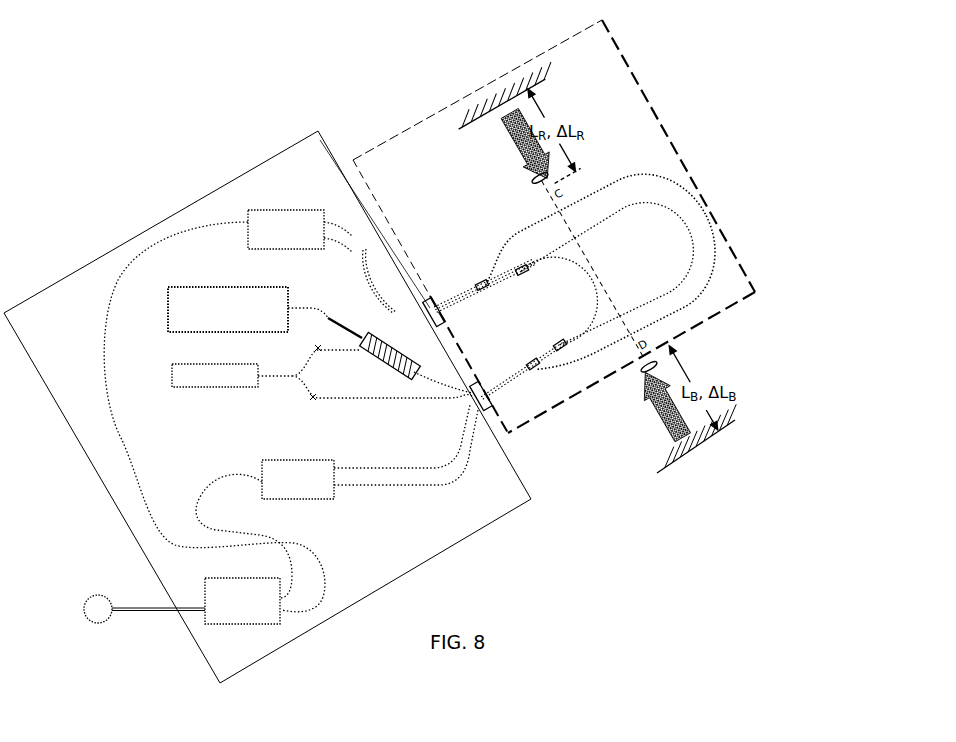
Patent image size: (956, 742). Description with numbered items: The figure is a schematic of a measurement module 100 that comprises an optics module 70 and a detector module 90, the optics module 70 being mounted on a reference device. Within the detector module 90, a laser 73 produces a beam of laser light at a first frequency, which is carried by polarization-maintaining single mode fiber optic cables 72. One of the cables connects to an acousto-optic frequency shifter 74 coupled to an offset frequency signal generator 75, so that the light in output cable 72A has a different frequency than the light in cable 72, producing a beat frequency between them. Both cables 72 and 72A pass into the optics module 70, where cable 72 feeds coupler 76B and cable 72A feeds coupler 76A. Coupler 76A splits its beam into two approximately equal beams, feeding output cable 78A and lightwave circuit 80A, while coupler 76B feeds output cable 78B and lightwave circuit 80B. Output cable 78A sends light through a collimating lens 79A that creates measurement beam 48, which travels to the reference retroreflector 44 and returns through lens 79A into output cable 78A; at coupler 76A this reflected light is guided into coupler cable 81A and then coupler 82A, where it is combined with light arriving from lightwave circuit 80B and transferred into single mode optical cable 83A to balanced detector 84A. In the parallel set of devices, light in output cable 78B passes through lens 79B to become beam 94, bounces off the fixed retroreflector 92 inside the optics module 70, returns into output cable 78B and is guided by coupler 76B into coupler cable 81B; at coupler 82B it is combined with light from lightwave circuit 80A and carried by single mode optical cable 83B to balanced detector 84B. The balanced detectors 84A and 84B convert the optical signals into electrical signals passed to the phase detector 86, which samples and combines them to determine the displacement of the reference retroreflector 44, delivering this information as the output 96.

The measurement module 100 is at (262, 58).
The optics module 70 is at (409, 122).
The detector module 90 is at (268, 158).
The fixed retroreflector 92 is at (500, 101).
The measurement beam (reference beam) 94 is at (500, 123).
The output cable 78A is at (648, 350).
The output cable 78B is at (572, 190).
The lightwave circuit 80A is at (675, 303).
The lightwave circuit 80B is at (668, 175).
The reference retroreflector 44 is at (697, 455).
The measurement beam 48 is at (735, 420).
The collimating lens 79A is at (646, 375).
The lens 79B is at (532, 183).
The coupler 76A is at (507, 260).
The coupler 76B is at (566, 350).
The coupler cable 81A is at (490, 275).
The coupler cable 81B is at (547, 362).
The coupler 82A is at (478, 282).
The coupler 82B is at (528, 392).
The single mode optical cable 83A is at (377, 297).
The single mode optical cable 83B is at (456, 444).
The balanced detector 84A is at (248, 228).
The balanced detector 84B is at (262, 492).
The polarization-maintaining single mode fiber optic cable 72 is at (315, 352).
The output cable 72A is at (408, 355).
The laser 73 is at (178, 375).
The acousto-optic frequency shifter 74 is at (400, 378).
The offset frequency signal generator 75 is at (168, 307).
The phase detector 86 is at (205, 590).
The output 96 is at (144, 609).